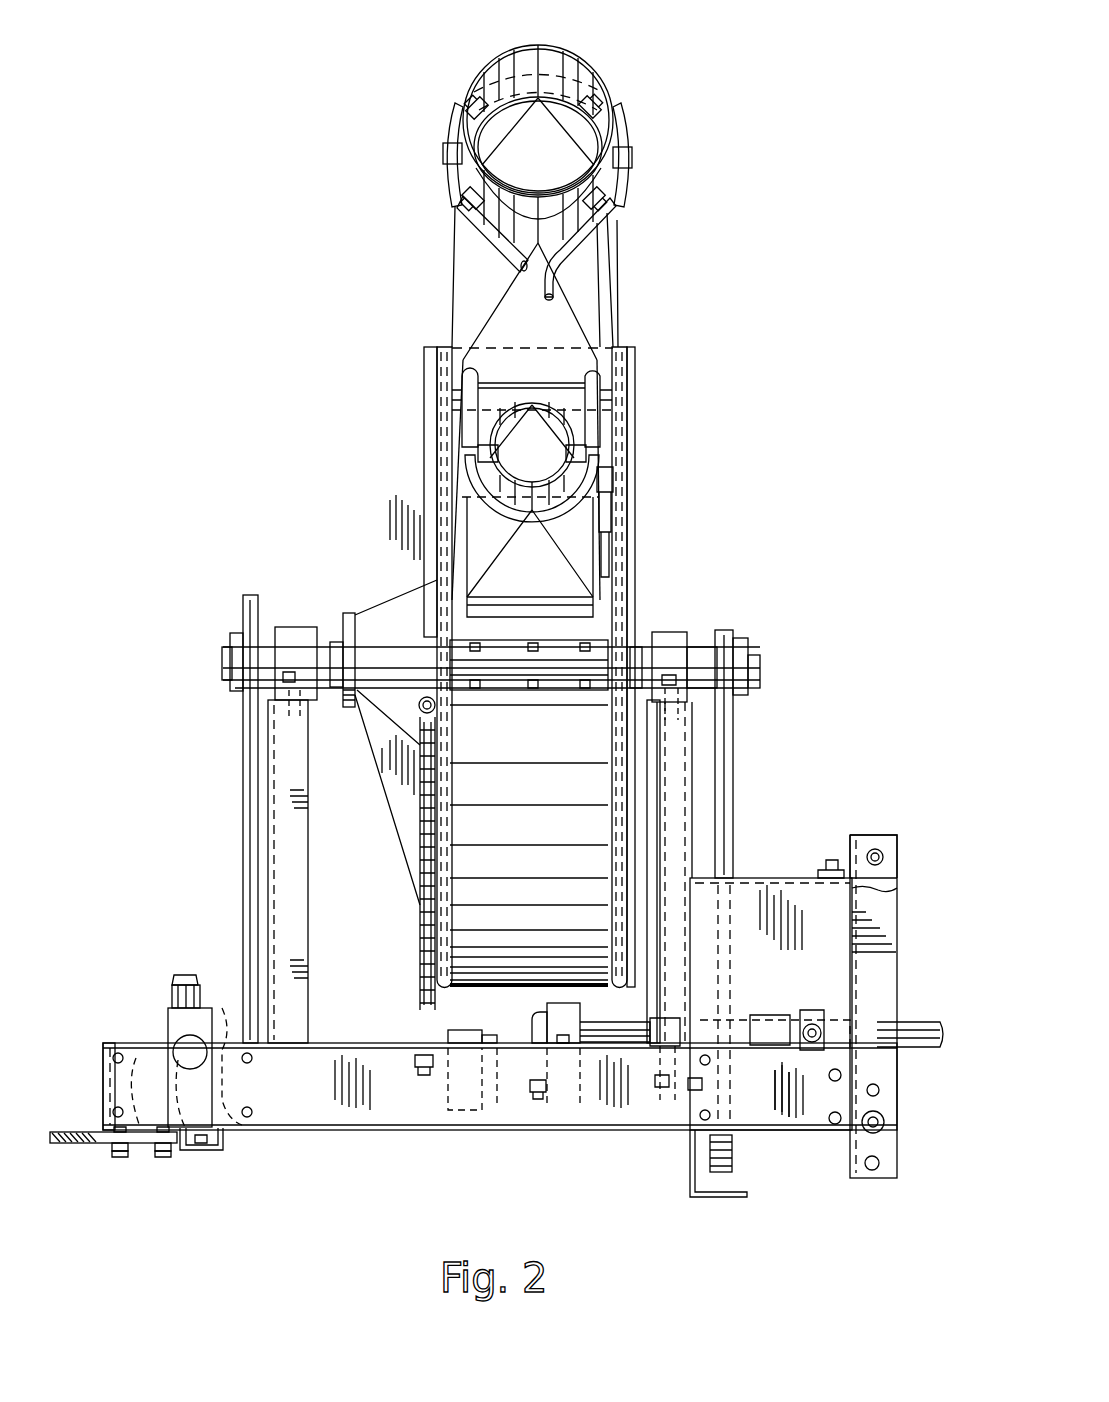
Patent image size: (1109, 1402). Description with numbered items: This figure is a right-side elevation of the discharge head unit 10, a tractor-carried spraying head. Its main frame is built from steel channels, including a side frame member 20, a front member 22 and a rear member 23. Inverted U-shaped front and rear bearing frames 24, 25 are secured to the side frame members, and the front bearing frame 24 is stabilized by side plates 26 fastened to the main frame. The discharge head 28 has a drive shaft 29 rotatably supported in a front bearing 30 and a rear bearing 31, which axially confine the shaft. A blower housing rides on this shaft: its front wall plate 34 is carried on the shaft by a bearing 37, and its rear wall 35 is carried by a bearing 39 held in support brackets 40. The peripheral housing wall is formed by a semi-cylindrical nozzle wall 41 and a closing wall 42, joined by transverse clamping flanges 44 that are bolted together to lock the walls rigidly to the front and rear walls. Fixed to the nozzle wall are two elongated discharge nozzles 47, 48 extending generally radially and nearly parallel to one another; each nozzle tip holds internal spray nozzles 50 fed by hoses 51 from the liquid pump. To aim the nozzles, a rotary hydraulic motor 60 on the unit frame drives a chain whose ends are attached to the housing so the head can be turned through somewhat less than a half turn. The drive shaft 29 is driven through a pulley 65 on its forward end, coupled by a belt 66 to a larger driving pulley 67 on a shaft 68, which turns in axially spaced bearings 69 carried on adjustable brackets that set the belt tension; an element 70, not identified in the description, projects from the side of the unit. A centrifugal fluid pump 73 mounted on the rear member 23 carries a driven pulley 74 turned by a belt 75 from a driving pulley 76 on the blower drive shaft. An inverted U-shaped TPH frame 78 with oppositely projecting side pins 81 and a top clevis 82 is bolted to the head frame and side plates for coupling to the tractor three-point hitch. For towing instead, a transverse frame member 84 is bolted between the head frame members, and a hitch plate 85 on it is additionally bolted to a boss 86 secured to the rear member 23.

The discharge head unit 10 is at (183, 716).
The side frame member 20 is at (387, 1130).
The front member 22 is at (690, 1172).
The rear member 23 is at (225, 1140).
The front bearing frame 24 is at (690, 758).
The rear bearing frame 25 is at (278, 880).
The side plates 26 is at (760, 893).
The discharge head 28 is at (536, 664).
The drive shaft 29 is at (700, 645).
The front bearing 30 is at (672, 630).
The rear bearing 31 is at (290, 632).
The front wall plate 34 is at (630, 483).
The rear wall 35 is at (446, 463).
The bearing 37 is at (640, 640).
The bearing 39 is at (345, 613).
The support brackets 40 is at (435, 524).
The nozzle wall 41 is at (436, 366).
The closing wall 42 is at (422, 906).
The transverse clamping flanges 44 is at (533, 645).
The discharge nozzle 47 is at (470, 172).
The discharge nozzle 48 is at (527, 415).
The internal spray nozzles 50 is at (582, 113).
The hoses 51 is at (505, 252).
The rotary hydraulic motor 60 is at (474, 1035).
The pulley 65 is at (750, 650).
The belt 66 is at (733, 815).
The driving pulley 67 is at (734, 1152).
The shaft 68 is at (608, 1030).
The bearings 69 is at (548, 1010).
The rod 70 is at (925, 1025).
The centrifugal fluid pump 73 is at (170, 1025).
The driven pulley 74 is at (238, 1060).
The belt 75 is at (243, 766).
The driving pulley 76 is at (237, 640).
The end plate 78 is at (898, 912).
The side pins 81 is at (885, 1122).
The top clevis 82 is at (880, 845).
The transverse frame member 84 is at (112, 1085).
The hitch plate 85 is at (104, 1143).
The boss 86 is at (175, 1143).